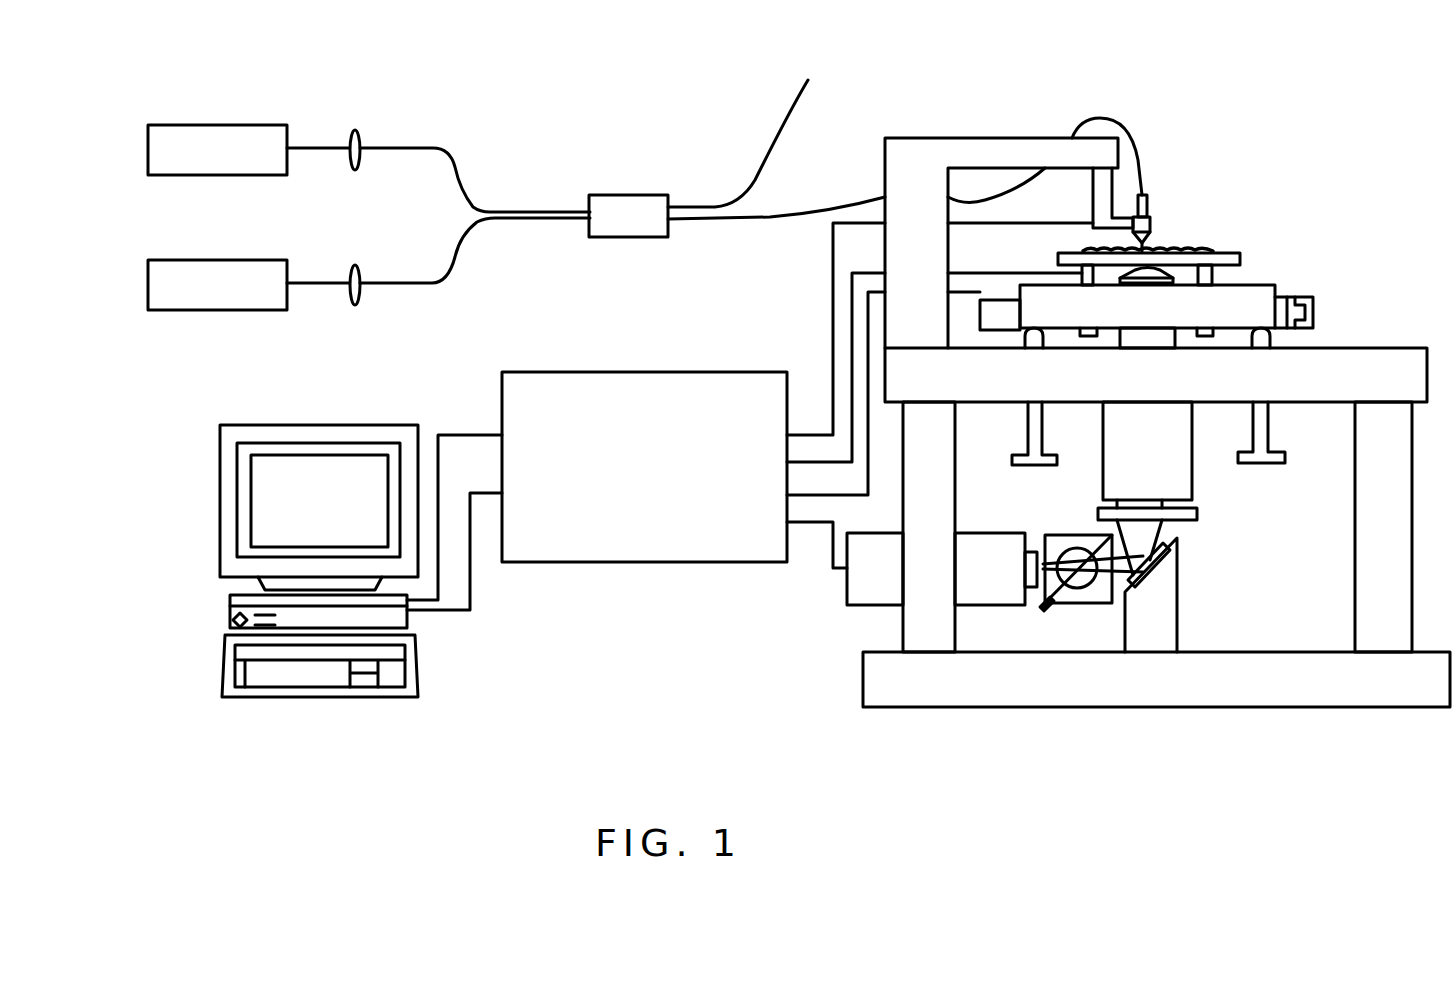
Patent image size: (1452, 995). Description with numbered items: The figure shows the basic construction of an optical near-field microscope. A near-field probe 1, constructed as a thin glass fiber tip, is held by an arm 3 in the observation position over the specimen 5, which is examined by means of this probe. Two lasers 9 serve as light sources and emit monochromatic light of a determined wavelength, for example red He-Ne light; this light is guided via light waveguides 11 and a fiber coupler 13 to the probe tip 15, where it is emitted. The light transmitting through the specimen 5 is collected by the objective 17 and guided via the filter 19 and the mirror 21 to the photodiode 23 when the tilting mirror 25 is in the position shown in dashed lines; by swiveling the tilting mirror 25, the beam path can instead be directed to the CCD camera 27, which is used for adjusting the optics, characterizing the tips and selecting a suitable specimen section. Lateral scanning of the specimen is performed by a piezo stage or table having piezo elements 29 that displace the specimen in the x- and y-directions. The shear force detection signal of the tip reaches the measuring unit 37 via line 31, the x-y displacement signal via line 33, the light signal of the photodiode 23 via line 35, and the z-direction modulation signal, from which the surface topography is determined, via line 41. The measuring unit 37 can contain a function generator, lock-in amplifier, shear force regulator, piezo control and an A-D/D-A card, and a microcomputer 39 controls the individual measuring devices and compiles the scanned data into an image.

The near-field probe 1 is at (1153, 218).
The arm 3 is at (1103, 192).
The specimen 5 is at (1195, 248).
The lasers 9 is at (242, 122).
The light waveguides 11 is at (467, 200).
The fiber coupler 13 is at (617, 195).
The probe tip 15 is at (1148, 244).
The objective 17 is at (1212, 275).
The filter 19 is at (1203, 514).
The mirror 21 is at (1180, 610).
The photodiode 23 is at (845, 588).
The tilting mirror 25 is at (1036, 610).
The CCD camera 27 is at (1102, 604).
The piezo elements 29 is at (1283, 288).
The line 31 is at (833, 252).
The line 33 is at (868, 368).
The line 35 is at (833, 545).
The measuring unit 37 is at (502, 405).
The microcomputer 39 is at (225, 492).
The line 41 is at (852, 313).